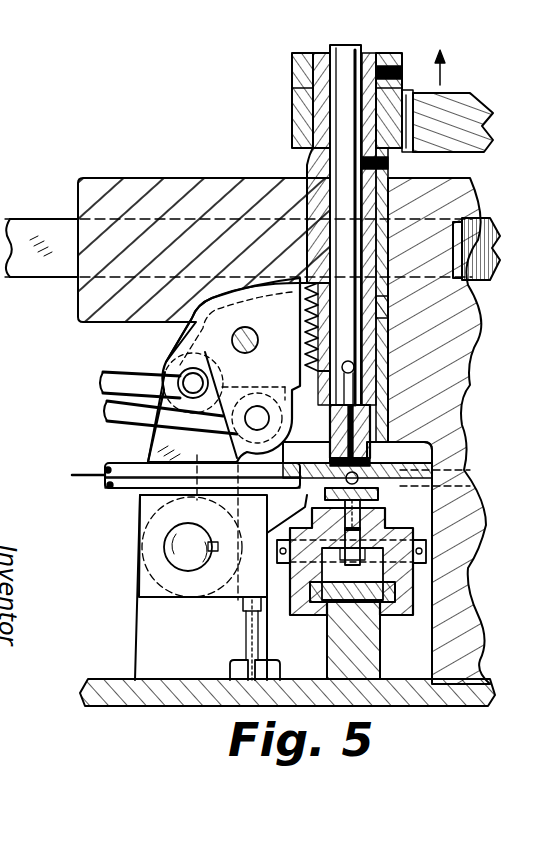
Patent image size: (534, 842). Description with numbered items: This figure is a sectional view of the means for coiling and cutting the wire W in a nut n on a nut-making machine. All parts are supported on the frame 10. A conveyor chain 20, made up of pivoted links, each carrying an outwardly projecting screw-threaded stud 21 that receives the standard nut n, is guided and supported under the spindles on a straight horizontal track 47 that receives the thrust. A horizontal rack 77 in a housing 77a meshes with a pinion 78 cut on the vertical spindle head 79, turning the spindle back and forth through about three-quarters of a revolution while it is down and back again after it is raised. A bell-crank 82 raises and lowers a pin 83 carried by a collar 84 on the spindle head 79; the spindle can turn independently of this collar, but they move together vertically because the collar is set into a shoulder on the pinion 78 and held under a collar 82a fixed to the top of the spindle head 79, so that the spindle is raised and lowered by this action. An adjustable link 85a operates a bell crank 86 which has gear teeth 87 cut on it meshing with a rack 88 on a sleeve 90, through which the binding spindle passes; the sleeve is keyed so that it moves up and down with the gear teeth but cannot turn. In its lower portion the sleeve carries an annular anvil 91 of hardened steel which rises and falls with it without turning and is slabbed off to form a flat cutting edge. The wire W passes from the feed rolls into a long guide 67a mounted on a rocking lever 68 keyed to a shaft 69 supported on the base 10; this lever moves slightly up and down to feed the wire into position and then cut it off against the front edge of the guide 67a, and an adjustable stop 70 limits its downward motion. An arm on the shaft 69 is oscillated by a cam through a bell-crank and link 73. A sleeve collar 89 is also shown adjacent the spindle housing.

The collar 82a is at (398, 58).
The bell-crank 82 is at (468, 110).
The collar 84 is at (302, 106).
The pin 83 is at (300, 137).
The vertical spindle head 79 is at (396, 173).
The housing 77a is at (160, 180).
The horizontal rack 77 is at (490, 228).
The pinion 78 is at (390, 241).
The sleeve collar 89 is at (383, 312).
The gear teeth 87 is at (303, 318).
The bell crank 86 is at (258, 344).
The rack 88 is at (385, 360).
The bell-crank and link 73 is at (102, 373).
The adjustable link 85a is at (166, 428).
The rocking lever 68 is at (192, 407).
The wire W is at (80, 473).
The long guide 67a is at (115, 490).
The shaft 69 is at (176, 556).
The adjustable stop 70 is at (246, 632).
The frame 10 is at (114, 679).
The sleeve 90 is at (395, 380).
The annular anvil 91 is at (398, 420).
The nut n is at (378, 495).
The screw-threaded stud 21 is at (432, 508).
The conveyor chain 20 is at (394, 618).
The straight horizontal track 47 is at (362, 596).